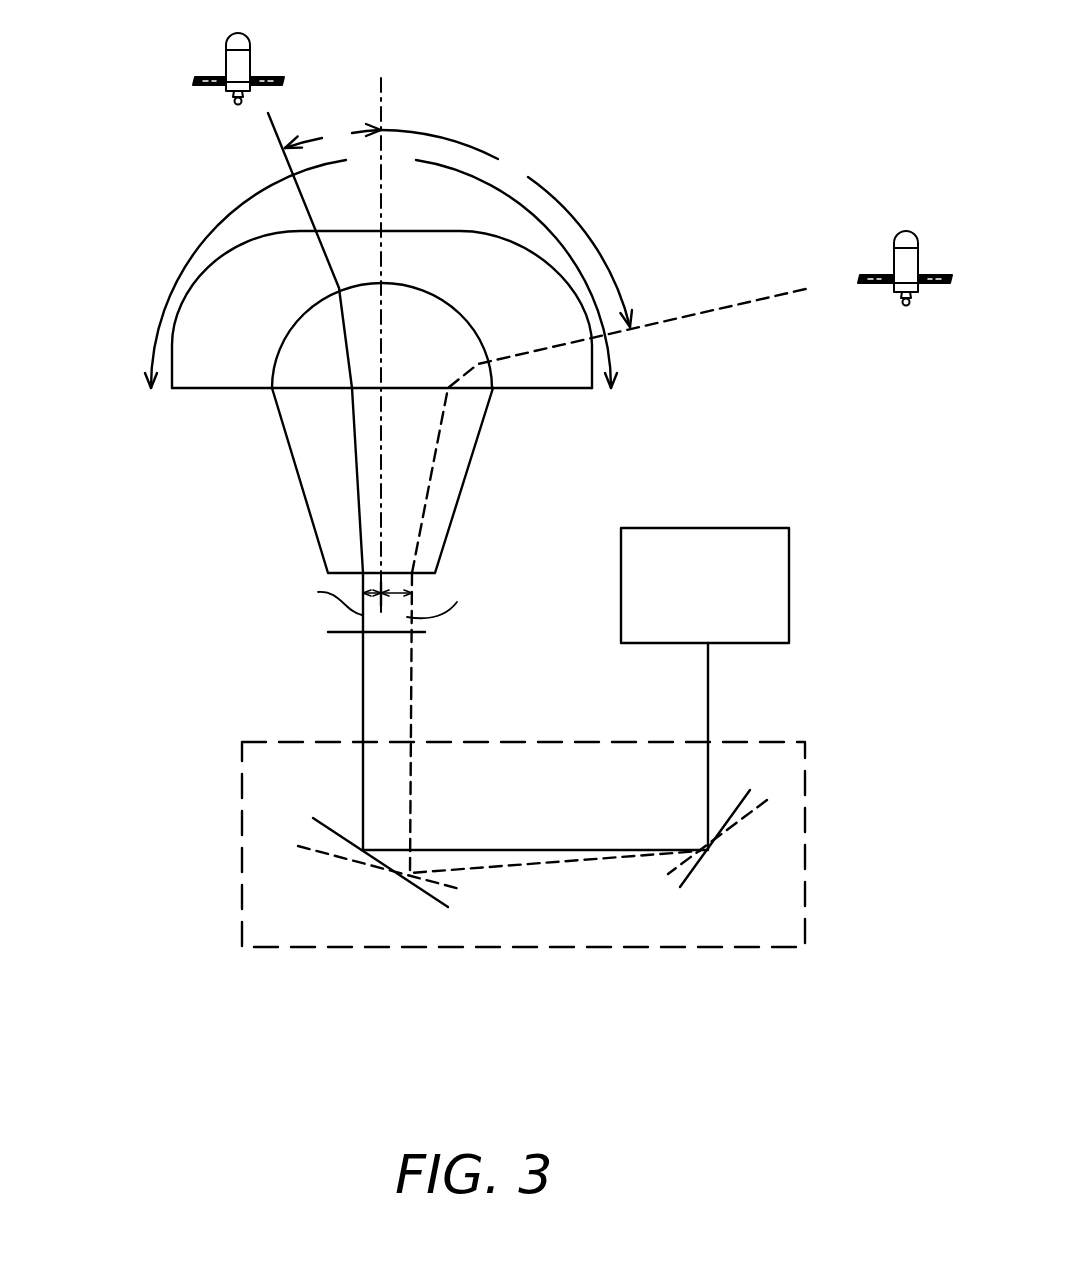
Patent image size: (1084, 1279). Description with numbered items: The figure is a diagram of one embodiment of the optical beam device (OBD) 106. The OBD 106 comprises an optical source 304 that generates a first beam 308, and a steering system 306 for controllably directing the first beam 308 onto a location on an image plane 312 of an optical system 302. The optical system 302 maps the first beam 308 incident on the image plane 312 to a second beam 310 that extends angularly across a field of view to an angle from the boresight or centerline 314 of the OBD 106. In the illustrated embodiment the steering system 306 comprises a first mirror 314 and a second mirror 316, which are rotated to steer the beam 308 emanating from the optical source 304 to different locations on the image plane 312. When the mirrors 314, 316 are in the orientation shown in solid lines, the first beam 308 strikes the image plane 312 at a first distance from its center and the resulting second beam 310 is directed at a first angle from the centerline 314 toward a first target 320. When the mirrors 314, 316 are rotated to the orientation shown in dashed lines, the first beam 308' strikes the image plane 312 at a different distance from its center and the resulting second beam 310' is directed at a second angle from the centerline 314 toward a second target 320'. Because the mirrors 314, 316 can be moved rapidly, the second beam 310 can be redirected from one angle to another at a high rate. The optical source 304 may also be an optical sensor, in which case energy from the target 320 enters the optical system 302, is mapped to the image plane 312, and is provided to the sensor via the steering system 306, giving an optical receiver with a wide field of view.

The optical beam device 106 is at (675, 160).
The optical system 302 is at (262, 447).
The optical source 304 is at (790, 593).
The steering system 306 is at (805, 812).
The first beam 308 is at (535, 711).
The first beam 308' is at (555, 723).
The second beam 310 is at (253, 343).
The second beam 310' is at (611, 416).
The image plane 312 is at (322, 632).
The first mirror 314 is at (383, 86).
The second mirror 316 is at (338, 830).
The first target 320 is at (167, 81).
The second target 320' is at (869, 298).